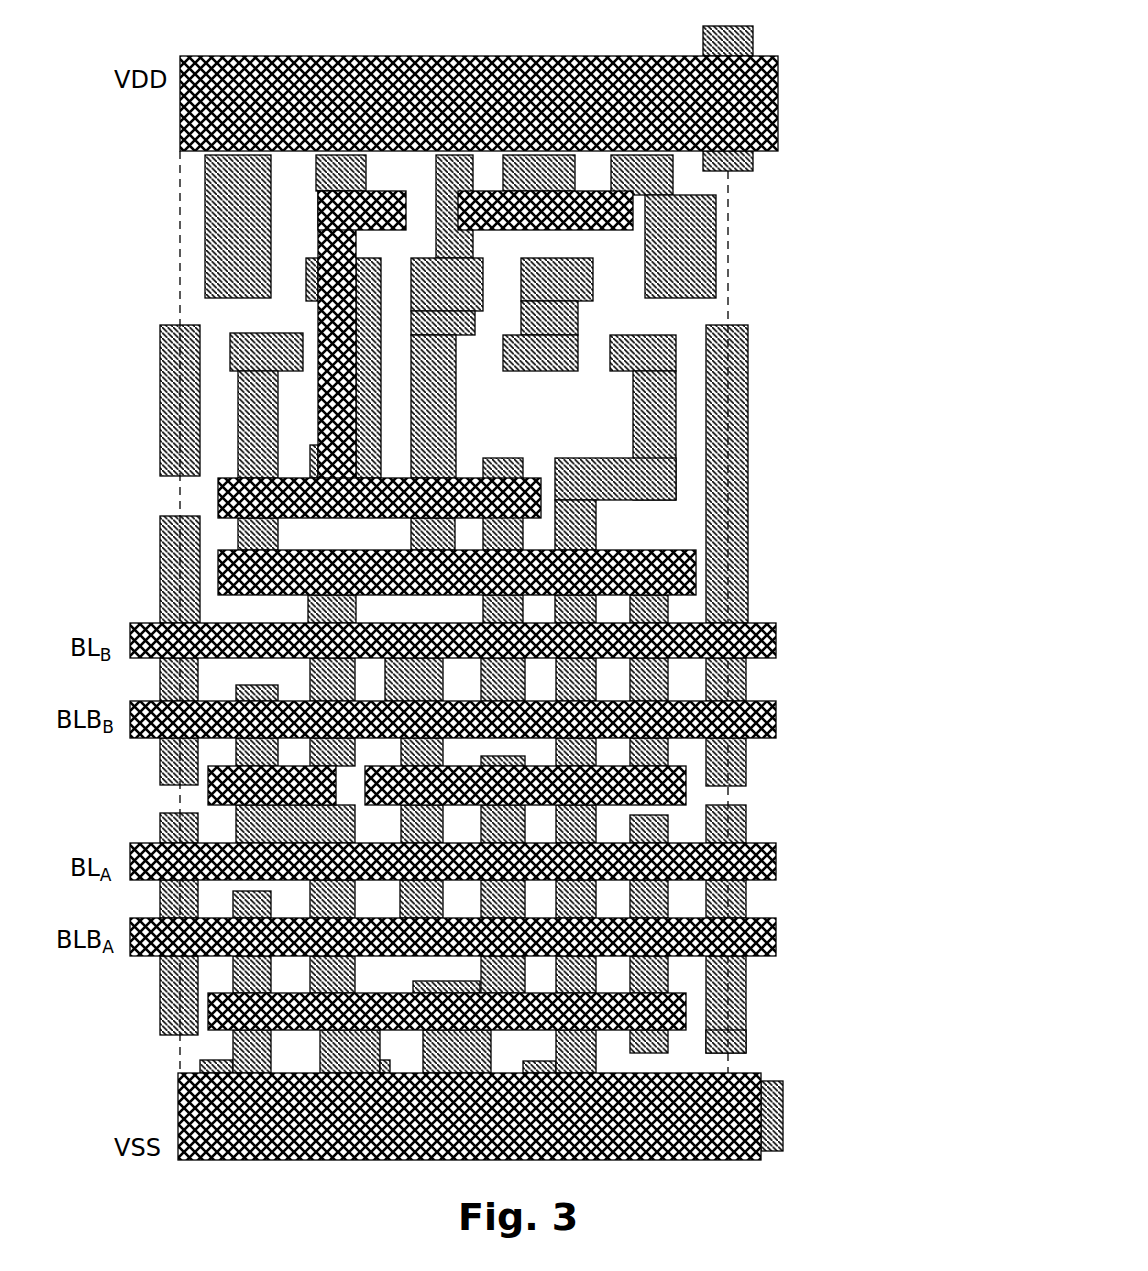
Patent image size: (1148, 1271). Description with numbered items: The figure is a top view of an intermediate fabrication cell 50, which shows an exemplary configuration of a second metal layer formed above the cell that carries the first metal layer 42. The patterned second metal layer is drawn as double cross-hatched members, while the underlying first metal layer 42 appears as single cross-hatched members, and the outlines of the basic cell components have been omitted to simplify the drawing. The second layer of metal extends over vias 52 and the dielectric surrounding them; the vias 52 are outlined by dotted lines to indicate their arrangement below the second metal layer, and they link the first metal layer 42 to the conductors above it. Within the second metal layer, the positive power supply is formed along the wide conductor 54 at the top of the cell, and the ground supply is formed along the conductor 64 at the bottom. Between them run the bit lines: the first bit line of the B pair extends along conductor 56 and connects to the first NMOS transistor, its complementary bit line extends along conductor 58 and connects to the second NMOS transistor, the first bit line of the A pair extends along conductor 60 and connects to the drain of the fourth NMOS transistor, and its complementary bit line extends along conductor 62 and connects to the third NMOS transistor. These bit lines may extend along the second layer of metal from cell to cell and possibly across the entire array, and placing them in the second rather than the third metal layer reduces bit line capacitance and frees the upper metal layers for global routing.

The first metal layer 42 is at (697, 27).
The intermediate fabrication cell 50 is at (545, 585).
The vias 52 is at (677, 143).
The conductor 54 is at (767, 92).
The conductor 56 is at (770, 618).
The conductor 58 is at (770, 697).
The conductor 60 is at (770, 838).
The conductor 62 is at (770, 914).
The conductor 64 is at (745, 1065).